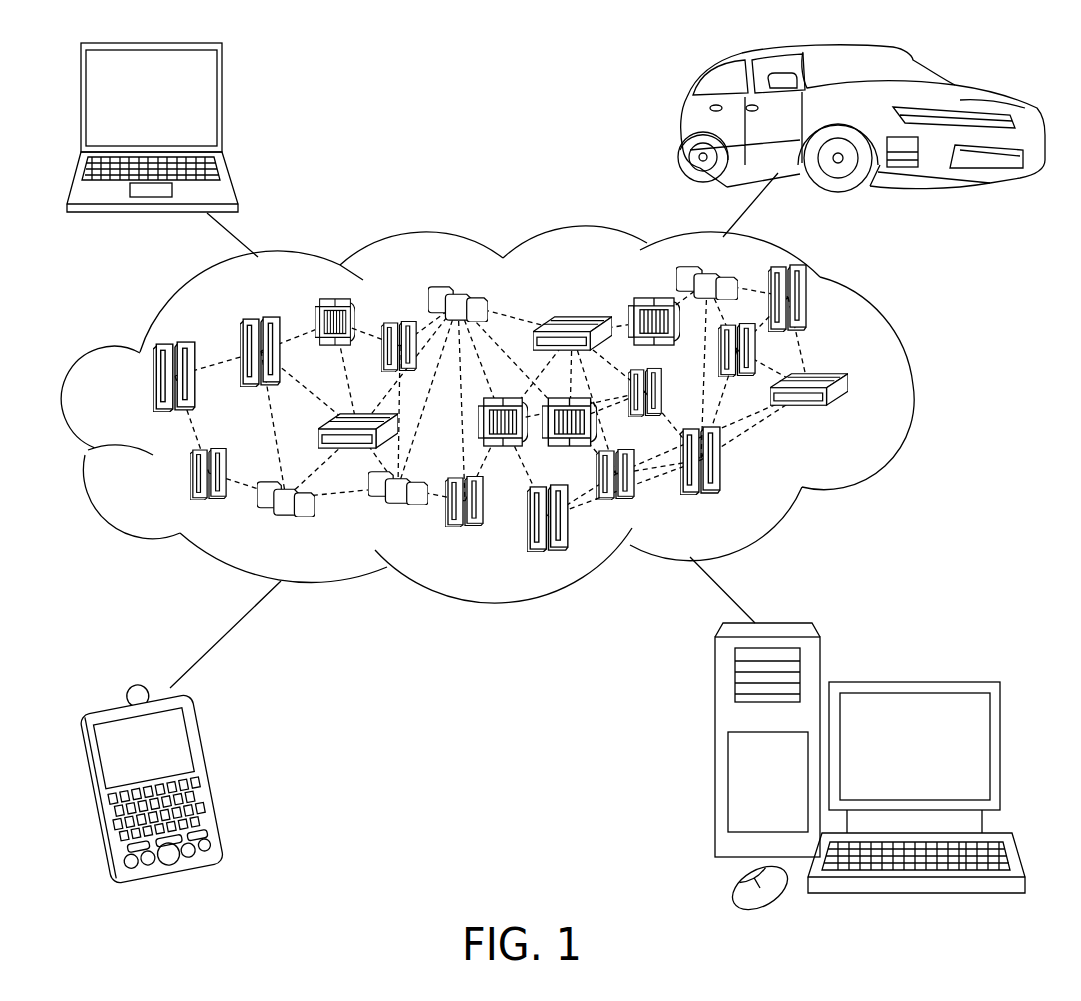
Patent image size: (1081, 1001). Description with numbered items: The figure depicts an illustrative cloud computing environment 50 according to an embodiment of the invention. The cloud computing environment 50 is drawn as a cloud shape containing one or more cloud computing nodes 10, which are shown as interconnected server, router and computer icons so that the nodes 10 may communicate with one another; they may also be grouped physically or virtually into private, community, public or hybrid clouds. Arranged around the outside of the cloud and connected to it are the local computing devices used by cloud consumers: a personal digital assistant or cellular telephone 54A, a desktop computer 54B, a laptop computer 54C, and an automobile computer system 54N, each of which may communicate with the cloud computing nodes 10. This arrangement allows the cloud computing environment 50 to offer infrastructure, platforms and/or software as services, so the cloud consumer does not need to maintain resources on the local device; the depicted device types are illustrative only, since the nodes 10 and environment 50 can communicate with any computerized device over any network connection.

The cloud computing node 10 is at (858, 419).
The cloud computing environment 50 is at (913, 384).
The personal digital assistant or cellular telephone 54A is at (213, 778).
The desktop computer 54B is at (912, 682).
The laptop computer 54C is at (223, 106).
The automobile computer system 54N is at (683, 117).